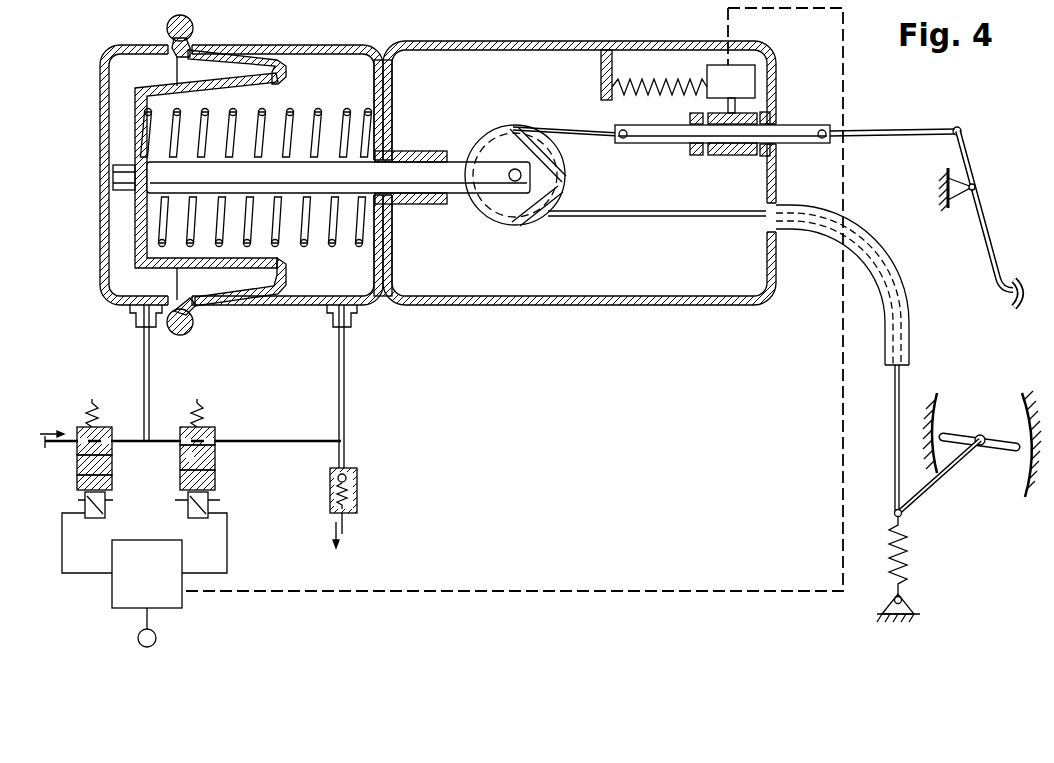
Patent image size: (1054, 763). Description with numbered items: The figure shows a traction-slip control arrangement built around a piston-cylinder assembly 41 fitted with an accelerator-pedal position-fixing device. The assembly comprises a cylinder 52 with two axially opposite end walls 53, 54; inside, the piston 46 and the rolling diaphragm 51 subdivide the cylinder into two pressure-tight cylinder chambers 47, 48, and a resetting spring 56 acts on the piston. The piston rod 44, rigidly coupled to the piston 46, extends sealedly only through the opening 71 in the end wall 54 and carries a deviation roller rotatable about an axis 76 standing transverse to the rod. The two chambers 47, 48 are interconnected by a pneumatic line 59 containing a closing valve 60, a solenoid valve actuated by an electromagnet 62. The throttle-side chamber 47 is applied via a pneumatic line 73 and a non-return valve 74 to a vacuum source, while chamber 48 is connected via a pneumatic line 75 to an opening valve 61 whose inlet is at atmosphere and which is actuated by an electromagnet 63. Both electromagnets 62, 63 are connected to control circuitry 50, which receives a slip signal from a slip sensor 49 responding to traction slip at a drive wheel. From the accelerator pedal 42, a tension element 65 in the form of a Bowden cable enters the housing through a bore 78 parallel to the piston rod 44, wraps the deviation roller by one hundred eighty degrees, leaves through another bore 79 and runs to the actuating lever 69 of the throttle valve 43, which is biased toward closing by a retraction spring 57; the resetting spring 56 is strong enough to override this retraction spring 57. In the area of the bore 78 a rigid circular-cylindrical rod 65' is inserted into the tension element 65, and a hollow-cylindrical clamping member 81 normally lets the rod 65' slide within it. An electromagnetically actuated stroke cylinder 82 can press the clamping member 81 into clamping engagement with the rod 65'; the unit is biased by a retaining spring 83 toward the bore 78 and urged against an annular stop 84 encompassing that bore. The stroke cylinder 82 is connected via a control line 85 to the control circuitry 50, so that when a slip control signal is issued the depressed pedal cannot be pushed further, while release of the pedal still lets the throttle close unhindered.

The piston-cylinder assembly 41 is at (117, 44).
The accelerator pedal 42 is at (1000, 283).
The throttle valve 43 is at (994, 449).
The piston rod 44 is at (454, 185).
The piston 46 is at (166, 87).
The cylinder chamber 47 is at (362, 287).
The cylinder chamber 48 is at (120, 287).
The slip sensor 49 is at (137, 638).
The control circuitry 50 is at (165, 598).
The rolling diaphragm 51 is at (246, 57).
The cylinder 52 is at (216, 43).
The end wall 53 is at (101, 68).
The end wall 54 is at (372, 97).
The resetting spring 56 is at (312, 112).
The retraction spring 57 is at (903, 568).
The pneumatic line 59 is at (147, 388).
The closing valve 60 is at (215, 466).
The opening valve 61 is at (78, 468).
The electromagnet 62 is at (198, 521).
The electromagnet 63 is at (93, 521).
The tension element 65 is at (737, 134).
The rigid circular-cylindrical rod 65' is at (722, 160).
The actuating lever 69 is at (920, 497).
The opening 71 is at (418, 158).
The pneumatic line 73 is at (345, 458).
The non-return valve 74 is at (330, 488).
The pneumatic line 75 is at (132, 445).
The axis 76 is at (515, 182).
The bore 78 is at (782, 128).
The bore 79 is at (777, 232).
The clamping member 81 is at (716, 156).
The stroke cylinder 82 is at (720, 72).
The retaining spring 83 is at (630, 80).
The annular stop 84 is at (777, 170).
The control line 85 is at (437, 597).